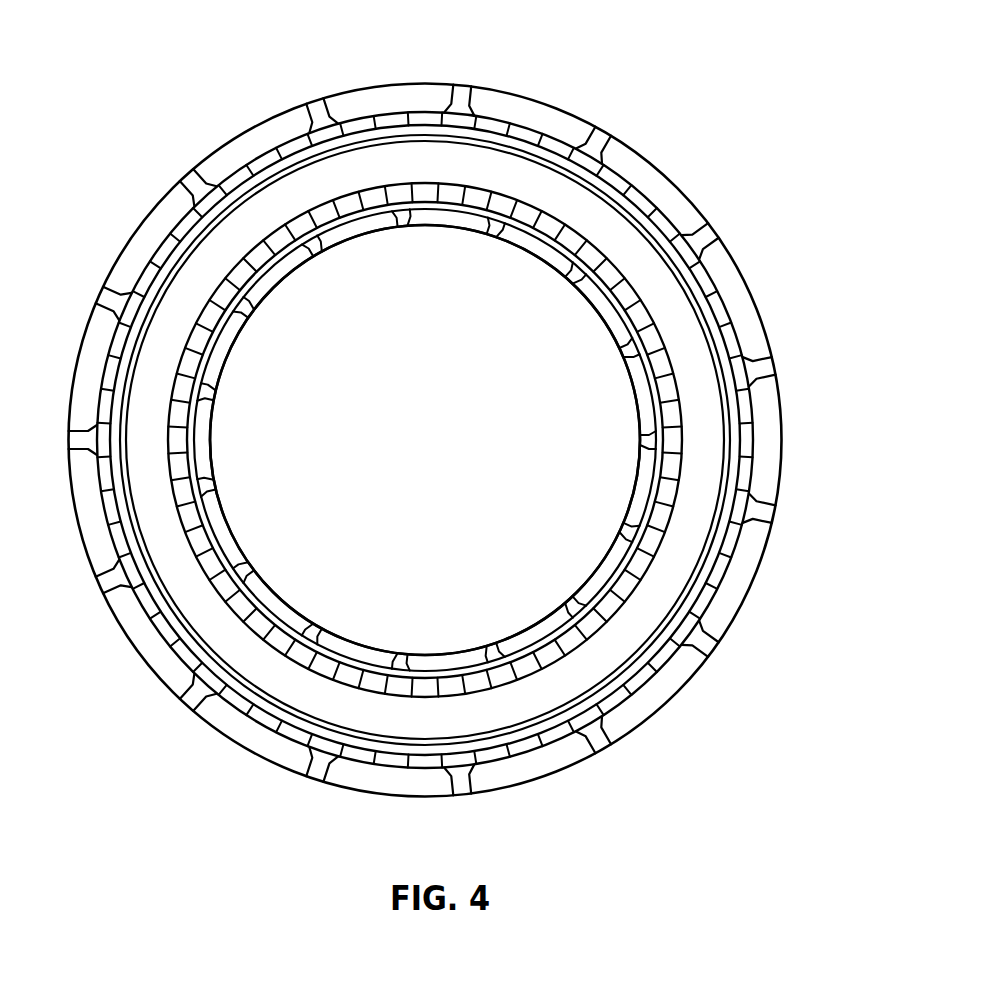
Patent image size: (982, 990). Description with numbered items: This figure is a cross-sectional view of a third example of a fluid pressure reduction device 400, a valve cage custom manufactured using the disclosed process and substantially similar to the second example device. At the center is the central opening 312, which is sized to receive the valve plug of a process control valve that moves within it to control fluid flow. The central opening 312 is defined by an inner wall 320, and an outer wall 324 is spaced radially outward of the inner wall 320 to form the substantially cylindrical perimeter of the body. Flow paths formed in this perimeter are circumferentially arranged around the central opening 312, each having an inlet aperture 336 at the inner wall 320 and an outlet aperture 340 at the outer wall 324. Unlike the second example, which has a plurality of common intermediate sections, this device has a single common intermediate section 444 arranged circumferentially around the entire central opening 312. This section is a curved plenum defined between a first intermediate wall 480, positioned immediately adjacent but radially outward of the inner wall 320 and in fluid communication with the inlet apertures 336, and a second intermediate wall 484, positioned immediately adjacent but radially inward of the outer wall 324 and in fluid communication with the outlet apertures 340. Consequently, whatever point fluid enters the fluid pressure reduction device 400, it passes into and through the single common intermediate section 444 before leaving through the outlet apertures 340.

The fluid pressure reduction device 400 is at (685, 128).
The outlet aperture 340 is at (712, 223).
The outer wall 324 is at (400, 82).
The second intermediate wall 484 is at (720, 338).
The single common intermediate section 444 is at (707, 410).
The first intermediate wall 480 is at (655, 393).
The inlet aperture 336 is at (570, 275).
The inner wall 320 is at (368, 233).
The central opening 312 is at (463, 437).